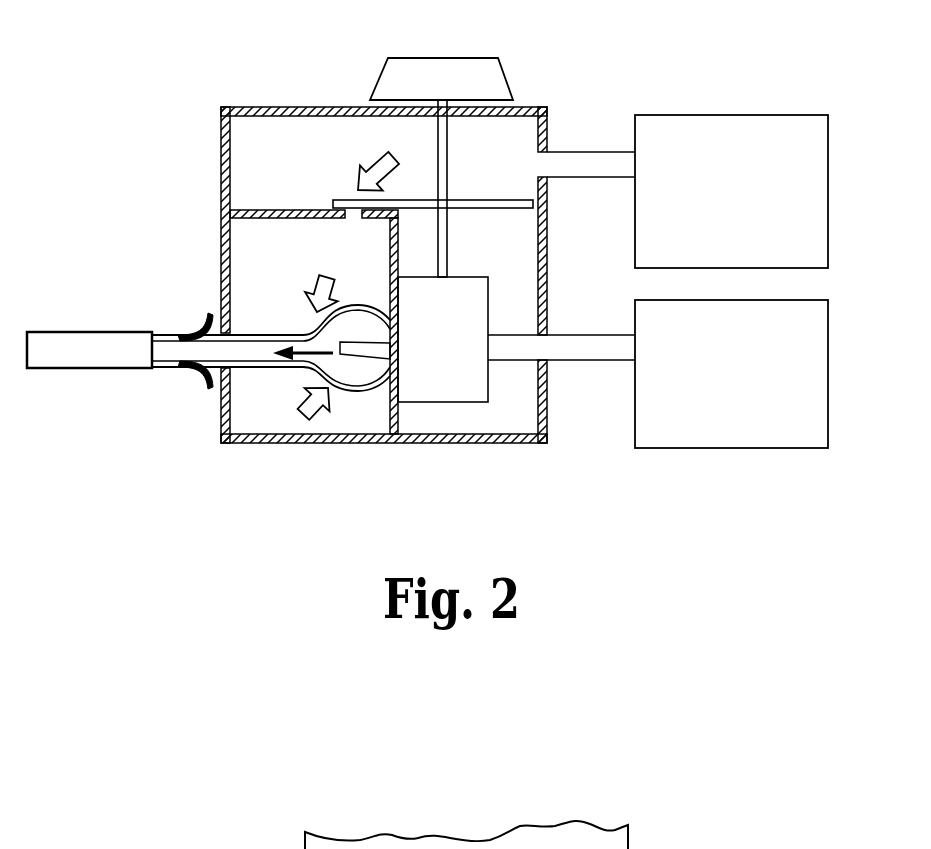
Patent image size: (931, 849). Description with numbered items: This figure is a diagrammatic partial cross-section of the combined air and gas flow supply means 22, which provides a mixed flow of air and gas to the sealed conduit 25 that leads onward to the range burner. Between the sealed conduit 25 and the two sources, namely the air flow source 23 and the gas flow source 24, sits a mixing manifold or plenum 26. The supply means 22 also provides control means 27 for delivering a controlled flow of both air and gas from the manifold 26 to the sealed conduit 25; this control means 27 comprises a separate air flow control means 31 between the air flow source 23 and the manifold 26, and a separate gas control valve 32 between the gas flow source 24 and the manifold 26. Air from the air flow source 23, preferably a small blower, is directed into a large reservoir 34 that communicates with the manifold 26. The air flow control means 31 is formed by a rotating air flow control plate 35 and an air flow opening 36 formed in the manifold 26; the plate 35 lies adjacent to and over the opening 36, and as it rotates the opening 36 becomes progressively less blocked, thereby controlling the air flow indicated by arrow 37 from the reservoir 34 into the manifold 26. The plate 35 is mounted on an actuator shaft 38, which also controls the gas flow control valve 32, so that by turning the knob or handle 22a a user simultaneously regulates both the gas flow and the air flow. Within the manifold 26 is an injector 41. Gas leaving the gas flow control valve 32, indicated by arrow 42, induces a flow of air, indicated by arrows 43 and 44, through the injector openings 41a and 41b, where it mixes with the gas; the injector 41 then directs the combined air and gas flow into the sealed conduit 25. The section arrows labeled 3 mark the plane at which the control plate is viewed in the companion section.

The air and gas flow supply means 22 is at (548, 422).
The knob or handle 22a is at (445, 58).
The air flow source 23 is at (732, 115).
The gas flow source 24 is at (732, 448).
The sealed conduit 25 is at (70, 332).
The mixing manifold or plenum 26 is at (265, 274).
The control means 27 is at (344, 191).
The air flow control means 31 is at (344, 225).
The gas control valve 32 is at (488, 383).
The reservoir 34 is at (503, 169).
The air flow control plate 35 is at (490, 208).
The air flow opening 36 is at (355, 223).
The air flow arrow 37 is at (370, 158).
The actuator shaft 38 is at (447, 259).
The injector 41 is at (257, 334).
The injector opening 41a is at (322, 327).
The injector opening 41b is at (311, 373).
The gas flow arrow 42 is at (215, 388).
The air flow arrow 43 is at (340, 293).
The air flow arrow 44 is at (332, 404).
The section line 3 is at (283, 184).